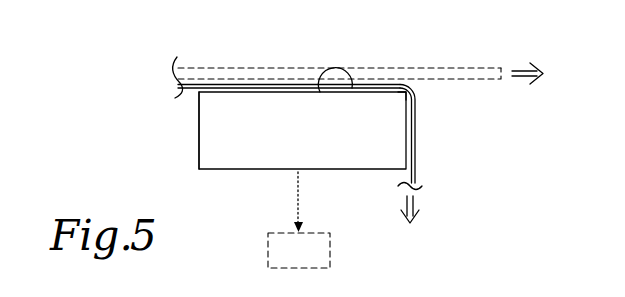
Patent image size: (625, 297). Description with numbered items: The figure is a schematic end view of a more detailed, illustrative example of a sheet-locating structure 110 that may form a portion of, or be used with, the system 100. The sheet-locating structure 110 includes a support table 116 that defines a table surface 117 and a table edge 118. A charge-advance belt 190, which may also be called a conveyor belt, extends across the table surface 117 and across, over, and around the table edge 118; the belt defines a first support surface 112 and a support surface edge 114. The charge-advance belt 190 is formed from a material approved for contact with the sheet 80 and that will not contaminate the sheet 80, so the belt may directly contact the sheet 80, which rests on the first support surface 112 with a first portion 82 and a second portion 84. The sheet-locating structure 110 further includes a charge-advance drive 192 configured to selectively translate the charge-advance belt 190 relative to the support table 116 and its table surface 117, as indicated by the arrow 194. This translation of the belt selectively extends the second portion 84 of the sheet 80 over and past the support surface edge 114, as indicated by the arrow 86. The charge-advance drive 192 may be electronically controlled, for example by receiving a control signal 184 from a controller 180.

The system 100 is at (103, 71).
The sheet-locating structure 110 is at (107, 117).
The sheet 80 is at (221, 66).
The web upstream portion 82 is at (318, 68).
The second portion 84 is at (489, 68).
The arrow 86 is at (518, 80).
The first support surface 112 is at (285, 80).
The support surface edge 114 is at (423, 89).
The support table 116 is at (197, 136).
The table surface 117 is at (320, 92).
The table edge 118 is at (394, 102).
The charge-advance belt 190 is at (393, 80).
The charge-advance drive 192 is at (239, 152).
The arrow 194 is at (415, 200).
The control signal 184 is at (299, 190).
The controller 180 is at (331, 245).